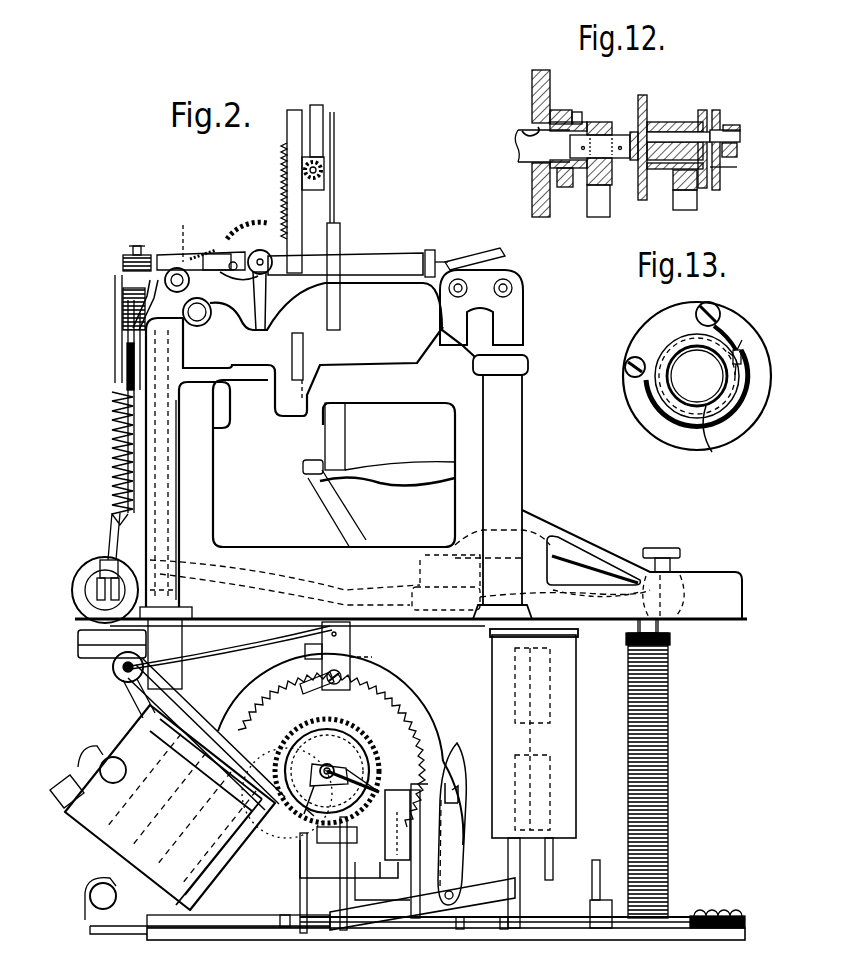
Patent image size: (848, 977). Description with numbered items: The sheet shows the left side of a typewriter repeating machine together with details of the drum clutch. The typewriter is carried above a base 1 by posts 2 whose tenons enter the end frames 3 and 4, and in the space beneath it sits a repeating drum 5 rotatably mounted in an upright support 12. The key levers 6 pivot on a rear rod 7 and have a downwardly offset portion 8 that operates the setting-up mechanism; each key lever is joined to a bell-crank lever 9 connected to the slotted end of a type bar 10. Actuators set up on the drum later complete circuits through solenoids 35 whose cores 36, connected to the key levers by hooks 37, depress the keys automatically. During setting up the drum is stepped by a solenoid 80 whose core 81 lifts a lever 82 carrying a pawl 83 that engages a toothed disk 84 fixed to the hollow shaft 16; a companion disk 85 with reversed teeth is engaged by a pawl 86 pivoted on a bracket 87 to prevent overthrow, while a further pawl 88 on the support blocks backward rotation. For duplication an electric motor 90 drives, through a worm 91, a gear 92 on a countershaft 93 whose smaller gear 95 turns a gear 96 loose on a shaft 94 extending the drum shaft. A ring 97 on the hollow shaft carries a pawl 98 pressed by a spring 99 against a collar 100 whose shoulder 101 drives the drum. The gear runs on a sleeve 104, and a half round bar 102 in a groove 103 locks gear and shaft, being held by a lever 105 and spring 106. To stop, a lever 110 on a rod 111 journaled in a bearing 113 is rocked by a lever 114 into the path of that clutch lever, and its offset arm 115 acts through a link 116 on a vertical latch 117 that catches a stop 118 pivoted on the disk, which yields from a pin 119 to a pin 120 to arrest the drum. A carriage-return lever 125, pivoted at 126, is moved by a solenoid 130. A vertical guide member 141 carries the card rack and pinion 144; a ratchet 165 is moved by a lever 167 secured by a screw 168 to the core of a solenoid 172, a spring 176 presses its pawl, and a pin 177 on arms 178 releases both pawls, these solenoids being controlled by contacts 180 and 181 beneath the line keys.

In FIG. 2, the base 1 is at (648, 940).
In FIG. 2, the posts 2 is at (176, 655).
In FIG. 2, the end frame 3 is at (524, 440).
In FIG. 2, the end frame 4 is at (172, 481).
In FIG. 2, the drum 5 is at (410, 686).
In FIG. 2, the key levers 6 is at (585, 552).
In FIG. 2, the rod 7 is at (172, 568).
In FIG. 2, the downwardly offset portion 8 is at (400, 567).
In FIG. 2, the bell-crank lever 9 is at (352, 522).
In FIG. 2, the type bar 10 is at (406, 464).
In FIG. 2, the support 12 is at (350, 651).
In FIG. 12, the hollow shaft 16 is at (530, 132).
In FIG. 2, the solenoids 35 is at (670, 770).
In FIG. 2, the cores 36 is at (660, 627).
In FIG. 2, the hooks 37 is at (678, 590).
In FIG. 2, the solenoid 80 is at (573, 772).
In FIG. 2, the core 81 is at (556, 864).
In FIG. 2, the lever 82 is at (482, 892).
In FIG. 2, the pawl 83 is at (456, 872).
In FIG. 2, the toothed disk 84 is at (405, 728).
In FIG. 2, the companion disk 85 is at (420, 736).
In FIG. 2, the pawl 86 is at (460, 770).
In FIG. 2, the bracket 87 is at (442, 930).
In FIG. 2, the pawl 88 is at (310, 686).
In FIG. 2, the electric motor 90 is at (135, 838).
In FIG. 2, the worm 91 is at (289, 932).
In FIG. 2, the gear 92 is at (366, 872).
In FIG. 2, the countershaft 93 is at (318, 863).
In FIG. 12, the shaft 94 is at (625, 193).
In FIG. 2, the smaller gear 95 is at (372, 848).
In FIG. 12, the gear 96 is at (650, 112).
In FIG. 2, the gear 96 is at (333, 745).
In FIG. 12, the ring 97 is at (560, 110).
In FIG. 13, the ring 97 is at (743, 324).
In FIG. 12, the pawl 98 is at (586, 125).
In FIG. 13, the pawl 98 is at (723, 330).
In FIG. 13, the spring 99 is at (748, 397).
In FIG. 12, the collar 100 is at (566, 188).
In FIG. 13, the collar 100 is at (721, 439).
In FIG. 13, the shoulder 101 is at (747, 362).
In FIG. 12, the half round bar 102 is at (748, 140).
In FIG. 12, the cylindrical groove 103 is at (660, 165).
In FIG. 12, the sleeve 104 is at (672, 124).
In FIG. 12, the lever 105 is at (722, 118).
In FIG. 2, the lever 105 is at (358, 760).
In FIG. 2, the spring 106 is at (300, 748).
In FIG. 2, the lever 110 is at (340, 928).
In FIG. 2, the rod 111 is at (505, 935).
In FIG. 2, the bearing 113 is at (600, 930).
In FIG. 2, the lever 114 is at (602, 872).
In FIG. 2, the offset arm 115 is at (384, 866).
In FIG. 2, the link 116 is at (452, 790).
In FIG. 2, the vertical latch 117 is at (444, 783).
In FIG. 2, the stop 118 is at (397, 825).
In FIG. 2, the pin 119 is at (414, 790).
In FIG. 2, the pin 120 is at (395, 833).
In FIG. 2, the lever 125 is at (134, 448).
In FIG. 2, the pivot 126 is at (110, 406).
In FIG. 2, the solenoid 130 is at (73, 584).
In FIG. 2, the vertical guide member 141 is at (292, 349).
In FIG. 2, the toothed pinion 144 is at (318, 178).
In FIG. 2, the ratchet 165 is at (253, 232).
In FIG. 2, the lever 167 is at (165, 247).
In FIG. 2, the screw 168 is at (139, 246).
In FIG. 2, the solenoid 172 is at (115, 298).
In FIG. 2, the spring 176 is at (171, 235).
In FIG. 2, the pin 177 is at (232, 262).
In FIG. 2, the arms 178 is at (208, 256).
In FIG. 2, the electrical contact 180 is at (430, 578).
In FIG. 2, the electrical contact 181 is at (432, 600).